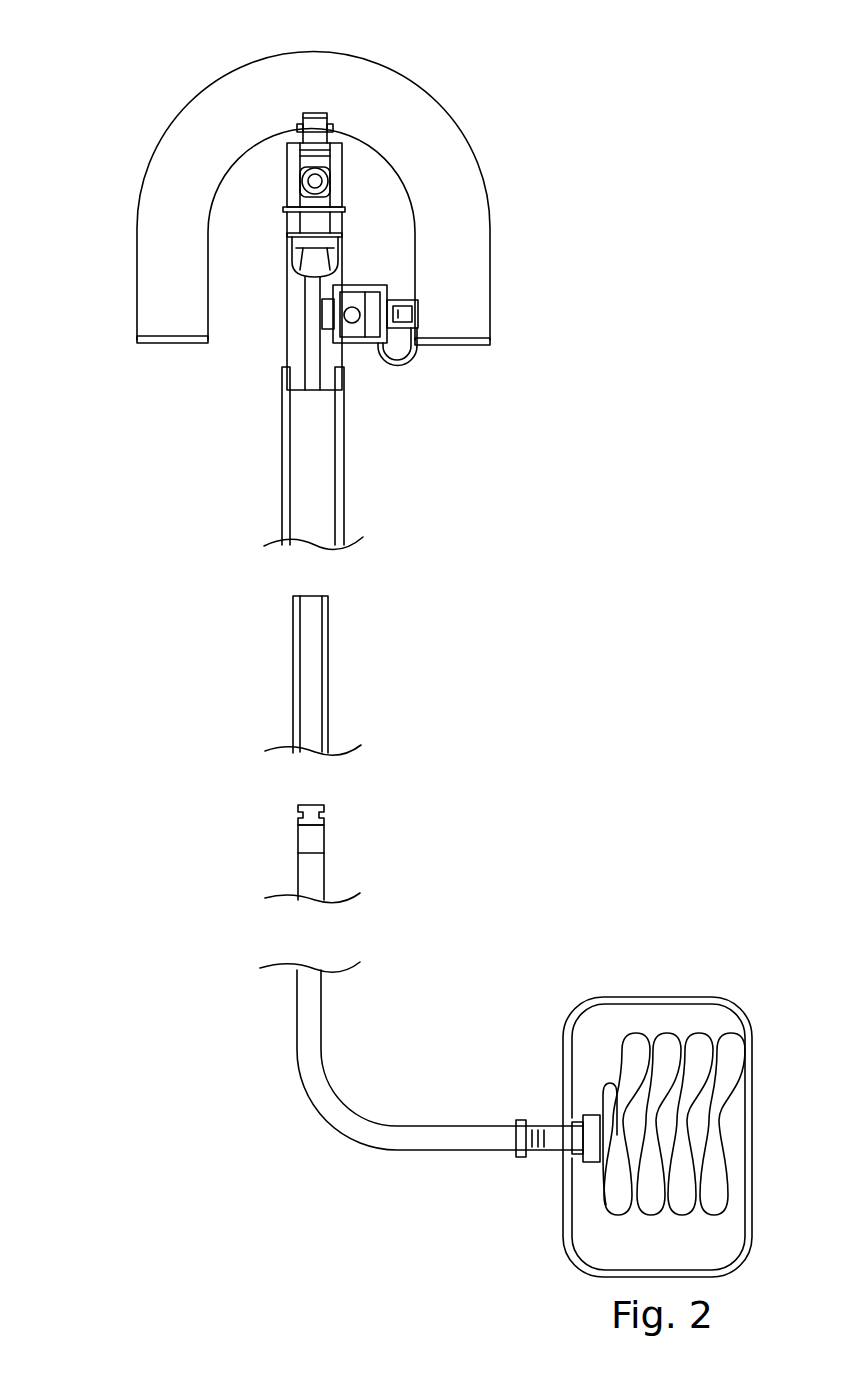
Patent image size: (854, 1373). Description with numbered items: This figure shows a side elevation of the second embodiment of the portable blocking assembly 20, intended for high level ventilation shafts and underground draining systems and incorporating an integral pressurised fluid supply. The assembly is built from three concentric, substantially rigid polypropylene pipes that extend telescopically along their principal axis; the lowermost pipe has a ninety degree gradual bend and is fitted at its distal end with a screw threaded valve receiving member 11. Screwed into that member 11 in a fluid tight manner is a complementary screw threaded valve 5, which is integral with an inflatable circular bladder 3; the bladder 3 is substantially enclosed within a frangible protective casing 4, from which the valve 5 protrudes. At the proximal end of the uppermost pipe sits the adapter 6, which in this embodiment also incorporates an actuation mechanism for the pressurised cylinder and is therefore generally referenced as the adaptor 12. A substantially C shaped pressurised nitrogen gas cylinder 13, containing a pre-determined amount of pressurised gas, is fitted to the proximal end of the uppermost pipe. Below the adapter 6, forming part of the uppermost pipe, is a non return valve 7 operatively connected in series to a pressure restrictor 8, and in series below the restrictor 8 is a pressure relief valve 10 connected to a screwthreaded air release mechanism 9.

The inflatable circular bladder 3 is at (670, 1033).
The frangible protective casing 4 is at (622, 997).
The screw threaded valve 5 is at (538, 1158).
The male adapter 6 is at (334, 156).
The non return valve 7 is at (326, 250).
The pressure restrictor 8 is at (312, 290).
The screwthreaded air release mechanism 9 is at (418, 314).
The pressure relief valve 10 is at (352, 345).
The screw threaded valve receiving member 11 is at (517, 1120).
The adaptor with actuation mechanism 12 is at (310, 112).
The pressurised nitrogen gas cylinder 13 is at (158, 193).
The blocking assembly 20 is at (400, 670).